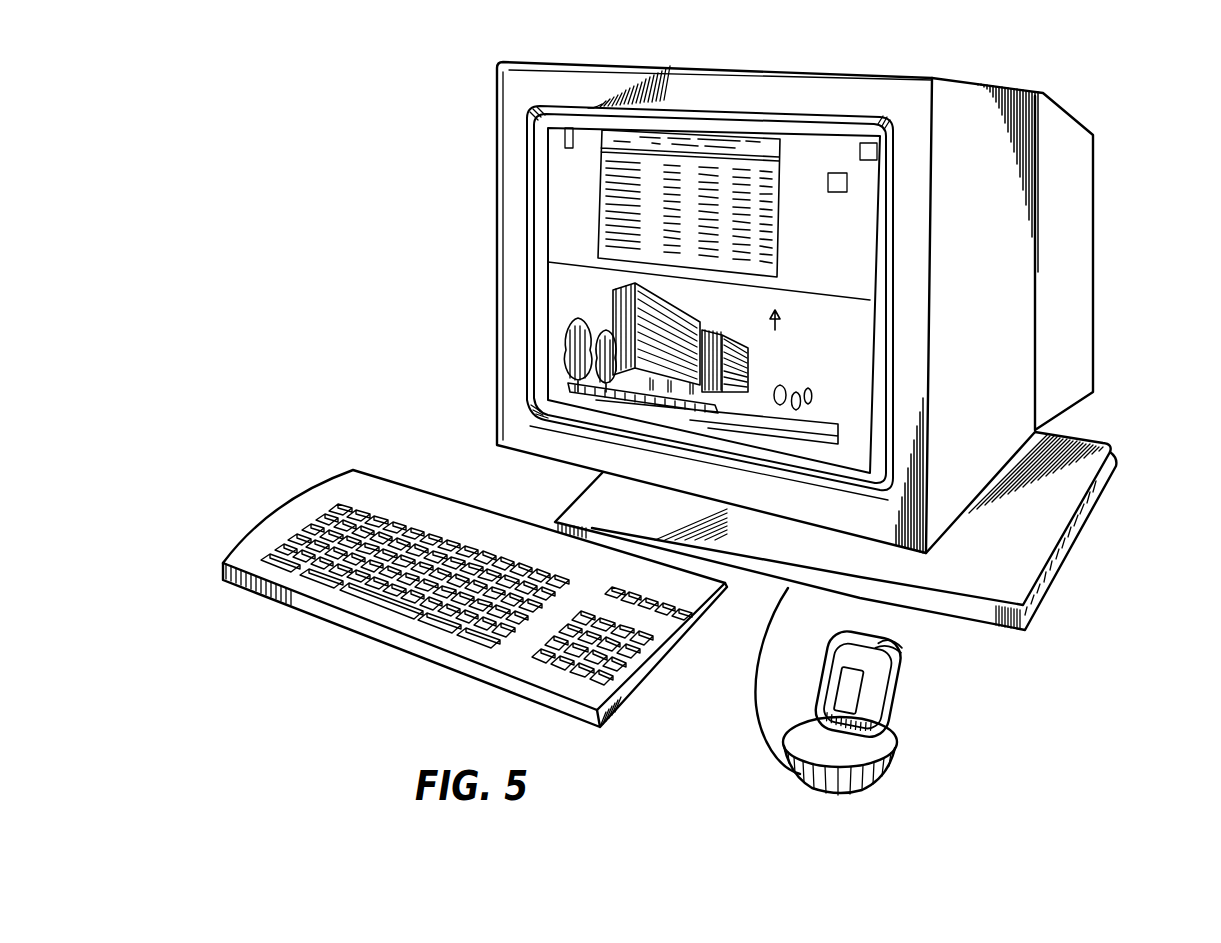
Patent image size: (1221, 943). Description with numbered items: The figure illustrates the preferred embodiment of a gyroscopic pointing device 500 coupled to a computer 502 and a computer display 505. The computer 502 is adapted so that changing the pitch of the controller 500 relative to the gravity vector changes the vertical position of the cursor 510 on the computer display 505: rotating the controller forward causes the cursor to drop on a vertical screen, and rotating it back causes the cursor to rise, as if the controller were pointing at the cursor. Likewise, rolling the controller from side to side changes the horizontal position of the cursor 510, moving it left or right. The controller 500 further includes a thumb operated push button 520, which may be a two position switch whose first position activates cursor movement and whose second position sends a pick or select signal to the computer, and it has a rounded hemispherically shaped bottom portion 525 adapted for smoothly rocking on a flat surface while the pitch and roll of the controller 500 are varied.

The gyroscopic pointing device 500 is at (897, 737).
The computer 502 is at (1104, 480).
The computer display 505 is at (560, 287).
The cursor 510 is at (785, 322).
The thumb operated push button 520 is at (900, 648).
The rounded hemispherically shaped bottom portion 525 is at (860, 786).